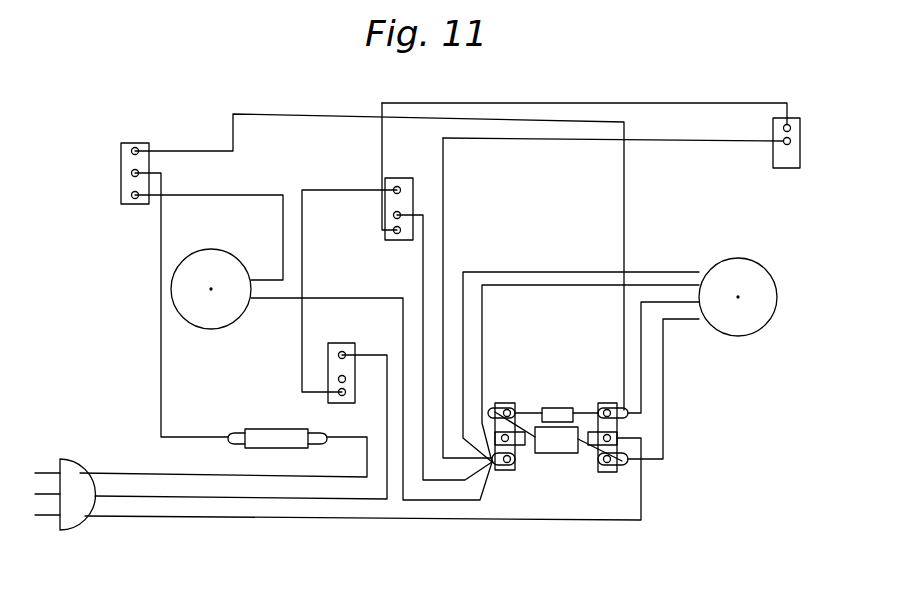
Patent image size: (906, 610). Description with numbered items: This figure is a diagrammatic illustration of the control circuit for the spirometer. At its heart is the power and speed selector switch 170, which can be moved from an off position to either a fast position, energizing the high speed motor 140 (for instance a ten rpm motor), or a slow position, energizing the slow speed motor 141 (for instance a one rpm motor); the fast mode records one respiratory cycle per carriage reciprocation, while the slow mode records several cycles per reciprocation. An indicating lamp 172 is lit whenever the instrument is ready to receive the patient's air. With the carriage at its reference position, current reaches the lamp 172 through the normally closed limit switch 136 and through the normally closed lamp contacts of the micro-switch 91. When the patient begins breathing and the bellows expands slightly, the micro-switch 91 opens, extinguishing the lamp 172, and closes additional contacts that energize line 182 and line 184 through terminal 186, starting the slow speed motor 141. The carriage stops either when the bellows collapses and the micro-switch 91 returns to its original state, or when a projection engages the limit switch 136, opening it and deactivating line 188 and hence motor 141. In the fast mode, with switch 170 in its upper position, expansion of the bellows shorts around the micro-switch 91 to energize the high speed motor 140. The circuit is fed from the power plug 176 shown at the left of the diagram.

The power and speed selector switch 170 is at (133, 143).
The slow speed motor 141 is at (212, 258).
The high speed motor 140 is at (771, 277).
The micro-switch 91 is at (385, 182).
The limit switch 136 is at (337, 343).
The indicating lamp 172 is at (800, 127).
The plug 176 is at (72, 470).
The line 182 is at (423, 288).
The line 184 is at (418, 500).
The terminal 186 is at (503, 465).
The line 188 is at (300, 345).